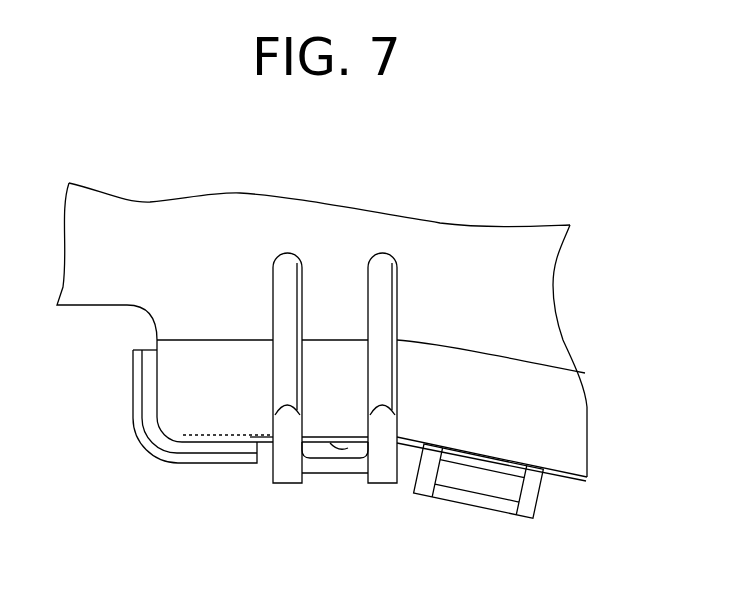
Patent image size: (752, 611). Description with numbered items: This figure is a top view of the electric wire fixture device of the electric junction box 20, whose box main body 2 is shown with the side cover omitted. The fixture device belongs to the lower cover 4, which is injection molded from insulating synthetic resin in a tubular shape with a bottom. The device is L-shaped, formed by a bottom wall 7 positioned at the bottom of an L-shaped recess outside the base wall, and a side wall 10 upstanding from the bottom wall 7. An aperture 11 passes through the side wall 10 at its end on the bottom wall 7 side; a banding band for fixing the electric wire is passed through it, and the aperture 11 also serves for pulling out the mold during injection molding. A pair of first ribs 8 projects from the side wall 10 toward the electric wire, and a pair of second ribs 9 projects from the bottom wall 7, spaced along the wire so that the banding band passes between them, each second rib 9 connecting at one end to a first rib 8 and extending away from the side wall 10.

The box main body 2 is at (590, 240).
The lower cover 4 is at (555, 312).
The bottom wall 7 is at (470, 392).
The first ribs 8 is at (287, 472).
The second ribs 9 is at (292, 277).
The side wall 10 is at (330, 473).
The aperture 11 is at (348, 447).
The electric junction box 20 is at (582, 202).